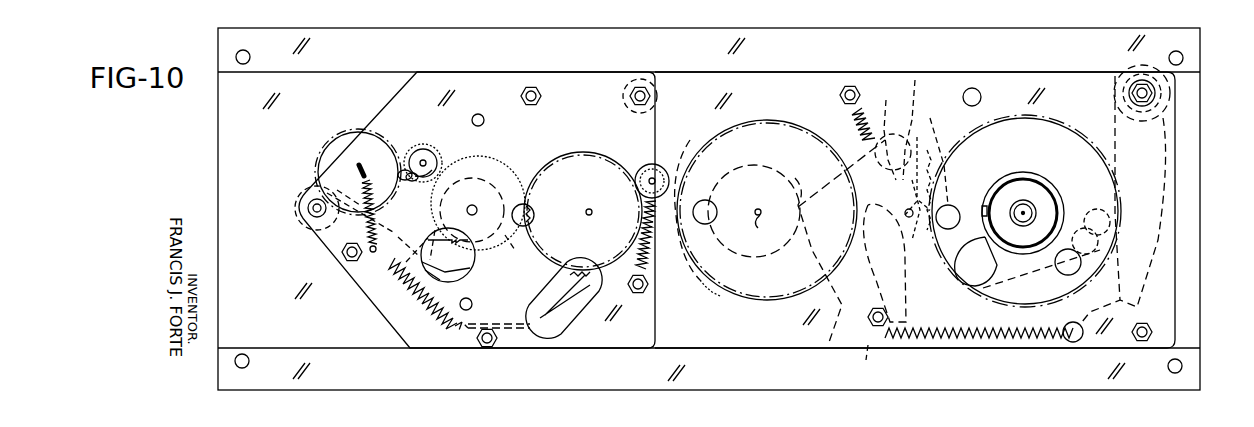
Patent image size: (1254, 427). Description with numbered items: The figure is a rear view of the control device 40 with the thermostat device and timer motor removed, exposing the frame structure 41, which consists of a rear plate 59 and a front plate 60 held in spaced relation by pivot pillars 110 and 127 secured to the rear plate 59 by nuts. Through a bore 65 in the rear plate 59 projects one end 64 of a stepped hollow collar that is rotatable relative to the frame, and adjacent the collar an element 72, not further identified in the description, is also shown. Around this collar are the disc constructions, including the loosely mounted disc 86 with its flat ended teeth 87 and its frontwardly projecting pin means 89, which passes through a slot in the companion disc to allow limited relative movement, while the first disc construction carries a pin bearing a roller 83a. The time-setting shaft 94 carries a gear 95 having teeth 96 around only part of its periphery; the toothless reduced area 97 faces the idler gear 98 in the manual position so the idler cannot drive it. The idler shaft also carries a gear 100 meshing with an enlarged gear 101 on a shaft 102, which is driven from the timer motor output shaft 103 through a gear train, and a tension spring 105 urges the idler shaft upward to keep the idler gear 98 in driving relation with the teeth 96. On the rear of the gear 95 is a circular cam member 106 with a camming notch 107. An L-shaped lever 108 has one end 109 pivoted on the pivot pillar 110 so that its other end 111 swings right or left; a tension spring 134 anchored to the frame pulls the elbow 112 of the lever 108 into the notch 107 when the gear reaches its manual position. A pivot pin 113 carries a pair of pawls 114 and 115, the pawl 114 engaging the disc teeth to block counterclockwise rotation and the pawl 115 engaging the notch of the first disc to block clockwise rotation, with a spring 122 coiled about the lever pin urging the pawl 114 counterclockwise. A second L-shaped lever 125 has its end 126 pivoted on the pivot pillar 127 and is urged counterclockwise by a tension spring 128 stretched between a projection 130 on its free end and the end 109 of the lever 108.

The control device 40 is at (186, 24).
The frame structure 41 is at (417, 44).
The rear plate 59 is at (790, 78).
The front plate 60 is at (592, 36).
The collar end 64 is at (1040, 186).
The bore 65 is at (1010, 177).
The stop member 72 is at (980, 204).
The roller 83a is at (1085, 260).
The disc 86 is at (940, 157).
The flat ended teeth 87 is at (925, 246).
The pin means 89 is at (1110, 222).
The shaft 94 is at (767, 225).
The gear 95 is at (704, 143).
The teeth 96 is at (688, 160).
The reduced area 97 is at (687, 268).
The idler gear 98 is at (650, 166).
The gear 100 is at (636, 180).
The enlarged gear 101 is at (583, 160).
The shaft 102 is at (590, 215).
The output shaft 103 is at (475, 206).
The tension spring 105 is at (618, 298).
The cam member 106 is at (762, 165).
The camming notch 107 is at (840, 242).
The L-shaped lever 108 is at (830, 327).
The lever end 109 is at (872, 361).
The pivot pillar 110 is at (872, 326).
The lever end 111 is at (882, 130).
The elbow 112 is at (790, 252).
The pivot pin 113 is at (906, 226).
The pawl 114 is at (918, 112).
The pawl 115 is at (905, 214).
The spring 122 is at (918, 80).
The L-shaped lever 125 is at (1128, 132).
The lever end 126 is at (1163, 118).
The pivot pillar 127 is at (1145, 90).
The tension spring 128 is at (952, 348).
The projection 130 is at (1073, 342).
The tension spring 134 is at (845, 113).